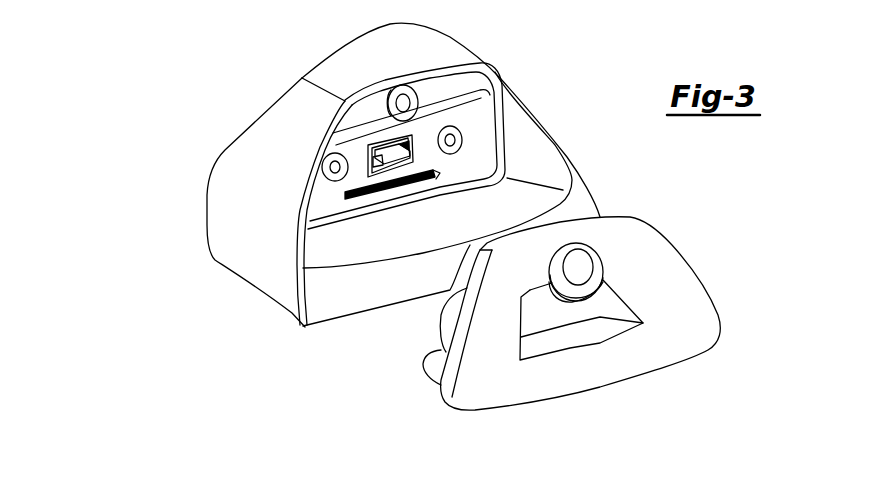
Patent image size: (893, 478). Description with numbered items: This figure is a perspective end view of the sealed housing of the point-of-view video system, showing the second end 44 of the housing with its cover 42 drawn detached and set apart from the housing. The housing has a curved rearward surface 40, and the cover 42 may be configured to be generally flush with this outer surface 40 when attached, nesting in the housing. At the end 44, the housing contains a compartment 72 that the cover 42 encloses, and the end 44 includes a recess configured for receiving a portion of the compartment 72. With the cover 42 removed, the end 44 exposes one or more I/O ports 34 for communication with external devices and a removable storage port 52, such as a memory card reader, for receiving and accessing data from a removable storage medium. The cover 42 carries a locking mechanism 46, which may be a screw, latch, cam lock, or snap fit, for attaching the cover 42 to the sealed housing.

The I/O ports 34 is at (455, 136).
The rearward surface 40 is at (361, 65).
The cover 42 is at (677, 312).
The end 44 is at (171, 232).
The locking mechanism 46 is at (580, 270).
The removable storage port 52 is at (365, 193).
The compartment 72 is at (331, 238).